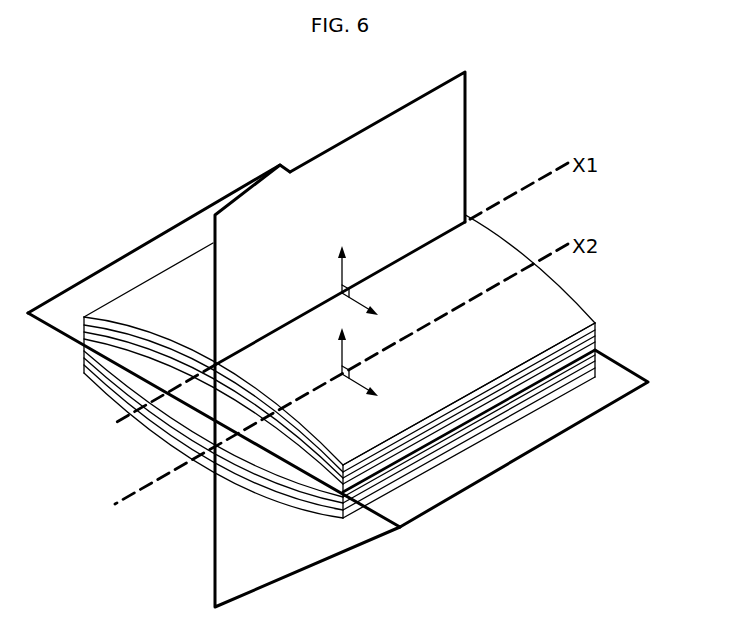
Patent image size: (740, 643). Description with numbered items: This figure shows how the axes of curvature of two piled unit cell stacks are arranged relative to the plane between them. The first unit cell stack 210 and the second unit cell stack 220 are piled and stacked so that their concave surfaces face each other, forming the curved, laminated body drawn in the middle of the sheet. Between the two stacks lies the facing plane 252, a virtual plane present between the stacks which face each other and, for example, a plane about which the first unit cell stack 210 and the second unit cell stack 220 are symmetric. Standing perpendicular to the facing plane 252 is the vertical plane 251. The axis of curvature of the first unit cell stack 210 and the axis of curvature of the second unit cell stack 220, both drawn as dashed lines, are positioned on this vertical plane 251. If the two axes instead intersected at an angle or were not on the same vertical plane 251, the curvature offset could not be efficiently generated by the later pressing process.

The first unit cell stack 210 is at (311, 346).
The second unit cell stack 220 is at (116, 352).
The vertical plane 251 is at (448, 114).
The facing plane 252 is at (609, 390).